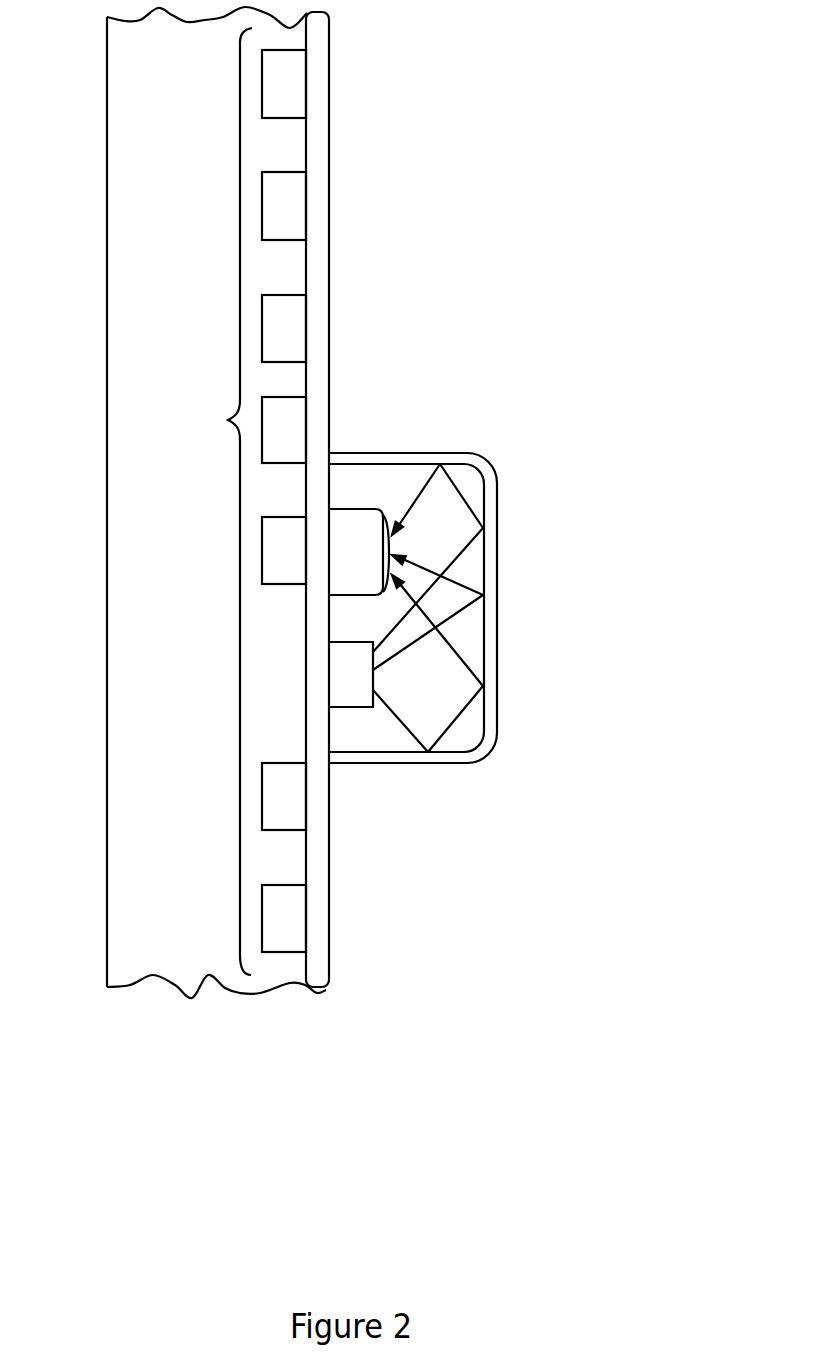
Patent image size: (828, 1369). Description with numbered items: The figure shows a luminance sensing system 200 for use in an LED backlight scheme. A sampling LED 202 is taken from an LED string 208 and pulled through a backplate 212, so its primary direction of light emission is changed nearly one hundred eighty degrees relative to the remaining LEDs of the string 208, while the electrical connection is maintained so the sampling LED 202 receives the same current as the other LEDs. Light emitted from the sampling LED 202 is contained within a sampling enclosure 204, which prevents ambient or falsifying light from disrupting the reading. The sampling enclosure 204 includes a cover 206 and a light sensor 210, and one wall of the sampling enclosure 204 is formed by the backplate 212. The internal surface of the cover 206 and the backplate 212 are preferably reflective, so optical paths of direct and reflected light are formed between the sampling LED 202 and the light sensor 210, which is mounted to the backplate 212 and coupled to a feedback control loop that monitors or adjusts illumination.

The luminance sensing system 200 is at (420, 279).
The sampling LED 202 is at (355, 713).
The sampling enclosure 204 is at (497, 617).
The cover 206 is at (500, 550).
The LED string 208 is at (216, 502).
The light sensor 210 is at (363, 503).
The backplate 212 is at (333, 124).